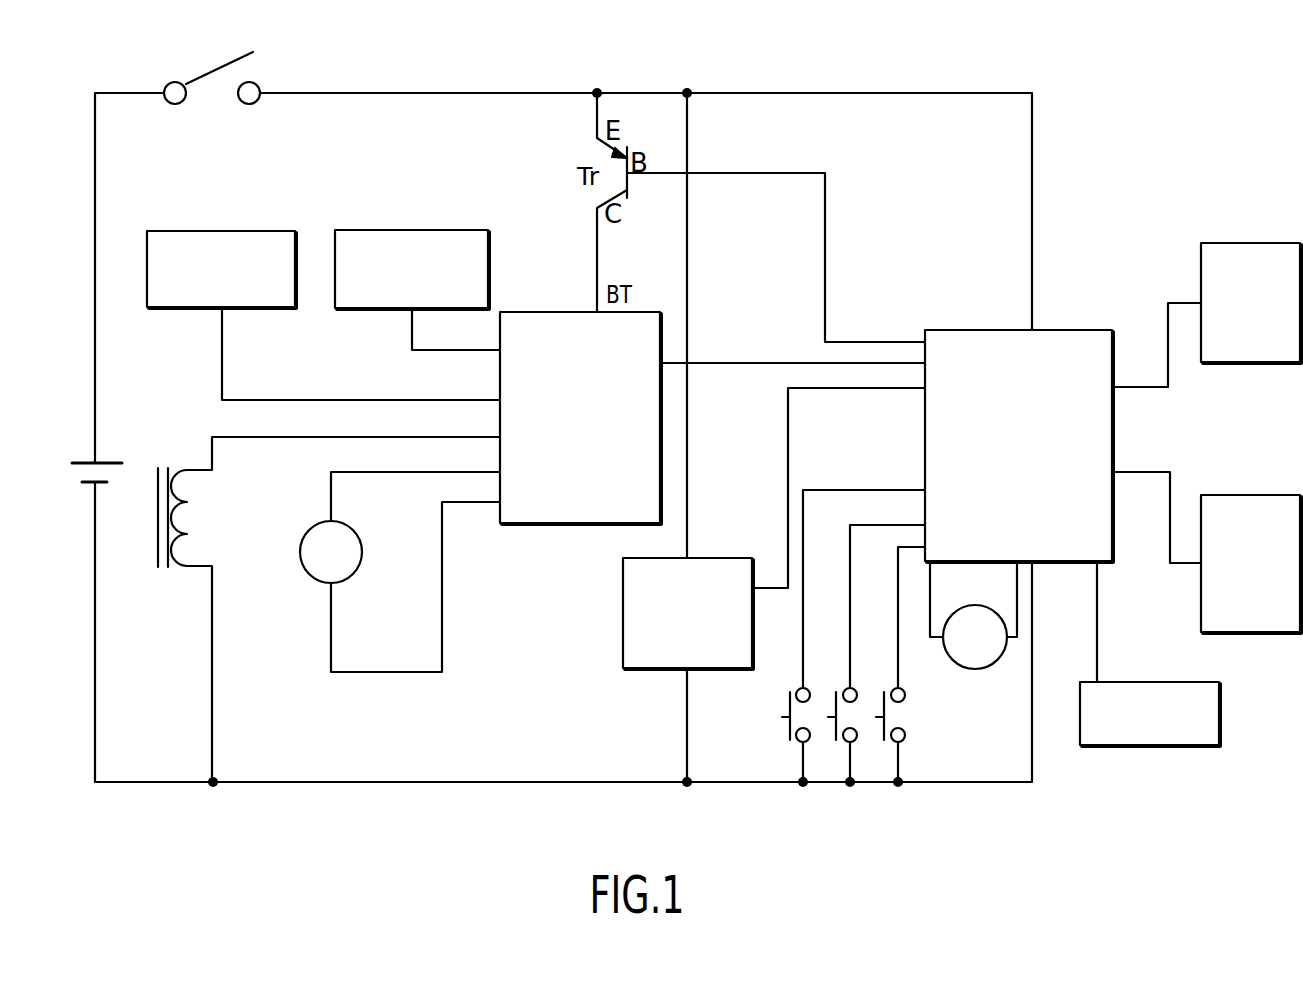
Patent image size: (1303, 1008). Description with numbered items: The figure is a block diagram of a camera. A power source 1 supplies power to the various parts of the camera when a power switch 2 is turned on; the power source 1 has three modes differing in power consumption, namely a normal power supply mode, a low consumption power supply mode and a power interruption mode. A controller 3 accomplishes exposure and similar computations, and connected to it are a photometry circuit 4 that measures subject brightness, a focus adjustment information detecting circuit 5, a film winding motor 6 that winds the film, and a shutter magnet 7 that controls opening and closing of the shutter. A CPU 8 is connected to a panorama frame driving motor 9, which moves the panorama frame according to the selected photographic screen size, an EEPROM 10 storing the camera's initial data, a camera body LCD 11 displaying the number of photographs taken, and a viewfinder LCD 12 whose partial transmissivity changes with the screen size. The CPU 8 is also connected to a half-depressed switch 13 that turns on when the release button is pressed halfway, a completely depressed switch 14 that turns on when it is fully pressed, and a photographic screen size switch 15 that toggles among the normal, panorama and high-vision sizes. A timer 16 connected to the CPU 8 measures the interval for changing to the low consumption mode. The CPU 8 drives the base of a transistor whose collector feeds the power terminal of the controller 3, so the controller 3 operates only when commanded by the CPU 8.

The power source 1 is at (76, 453).
The power switch 2 is at (257, 68).
The controller 3 is at (547, 524).
The photometry circuit 4 is at (405, 231).
The focus adjustment information detecting circuit 5 is at (252, 231).
The film winding motor 6 is at (357, 573).
The shutter magnet 7 is at (160, 577).
The CPU 8 is at (1082, 330).
The panorama frame driving motor 9 is at (968, 669).
The EEPROM 10 is at (623, 643).
The camera body LCD 11 is at (1232, 363).
The viewfinder LCD 12 is at (1250, 633).
The half-depressed switch 13 is at (780, 733).
The completely depressed switch 14 is at (837, 683).
The photographic screen size switch 15 is at (893, 713).
The timer 16 is at (1153, 746).